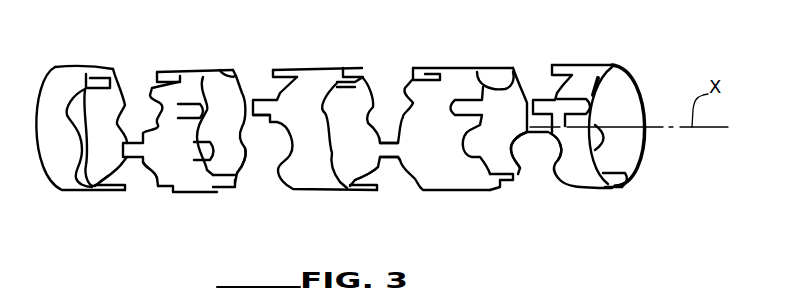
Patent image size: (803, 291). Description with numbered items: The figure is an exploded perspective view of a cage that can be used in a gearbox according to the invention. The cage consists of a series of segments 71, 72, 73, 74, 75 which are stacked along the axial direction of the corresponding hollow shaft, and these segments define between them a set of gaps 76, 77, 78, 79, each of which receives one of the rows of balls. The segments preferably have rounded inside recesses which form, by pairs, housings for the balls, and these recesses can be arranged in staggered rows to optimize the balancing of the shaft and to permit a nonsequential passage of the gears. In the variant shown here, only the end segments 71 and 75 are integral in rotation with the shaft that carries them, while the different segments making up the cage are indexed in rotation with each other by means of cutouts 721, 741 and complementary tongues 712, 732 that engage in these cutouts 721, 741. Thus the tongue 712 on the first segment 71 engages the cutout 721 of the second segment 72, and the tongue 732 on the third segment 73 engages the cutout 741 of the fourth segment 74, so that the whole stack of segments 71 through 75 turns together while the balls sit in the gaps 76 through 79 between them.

The segment 71 is at (70, 66).
The tongue 712 is at (102, 72).
The segment 72 is at (192, 68).
The cutout 721 is at (167, 72).
The segment 73 is at (317, 67).
The tongue 732 is at (261, 103).
The segment 74 is at (463, 67).
The cutout 741 is at (432, 67).
The segment 75 is at (590, 65).
The gap 76 is at (140, 175).
The gap 77 is at (265, 150).
The gap 78 is at (393, 173).
The gap 79 is at (535, 145).